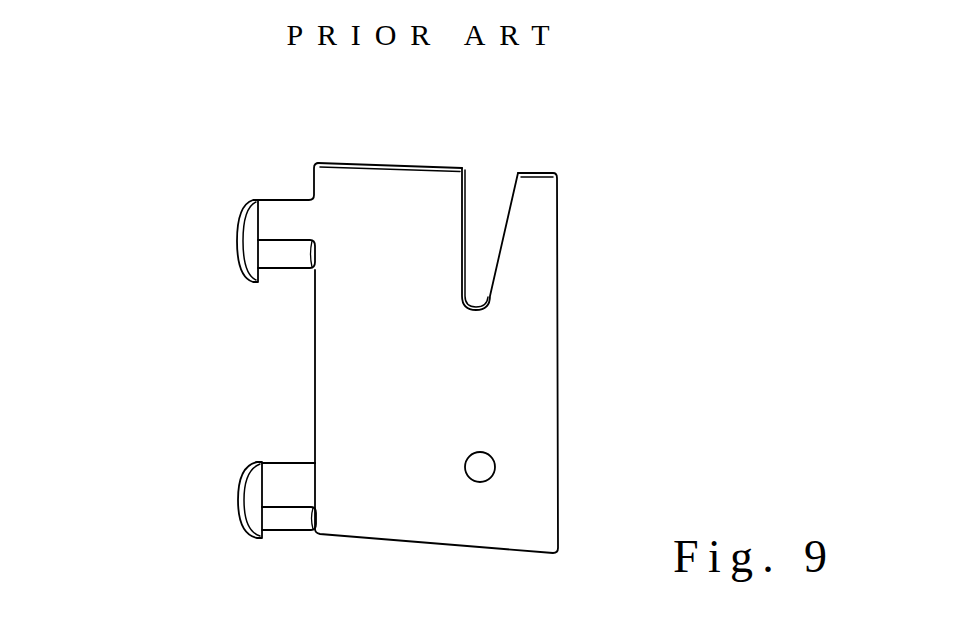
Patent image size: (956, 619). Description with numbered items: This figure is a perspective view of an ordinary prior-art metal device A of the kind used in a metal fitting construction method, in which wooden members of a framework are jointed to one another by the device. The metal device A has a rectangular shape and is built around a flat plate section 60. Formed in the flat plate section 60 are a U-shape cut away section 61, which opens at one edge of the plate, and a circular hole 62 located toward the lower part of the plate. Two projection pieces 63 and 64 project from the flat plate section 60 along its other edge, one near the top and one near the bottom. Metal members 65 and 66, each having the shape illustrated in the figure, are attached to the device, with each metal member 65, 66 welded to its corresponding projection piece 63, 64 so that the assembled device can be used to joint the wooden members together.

The flat plate section 60 is at (532, 323).
The U-shape cut away section 61 is at (487, 250).
The circular hole 62 is at (480, 467).
The projection piece 63 is at (290, 218).
The projection piece 64 is at (286, 480).
The metal member 65 is at (237, 248).
The metal member 66 is at (238, 497).
The metal device A is at (558, 395).